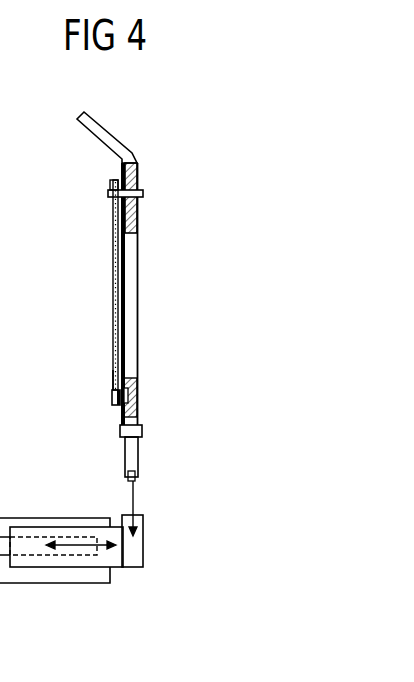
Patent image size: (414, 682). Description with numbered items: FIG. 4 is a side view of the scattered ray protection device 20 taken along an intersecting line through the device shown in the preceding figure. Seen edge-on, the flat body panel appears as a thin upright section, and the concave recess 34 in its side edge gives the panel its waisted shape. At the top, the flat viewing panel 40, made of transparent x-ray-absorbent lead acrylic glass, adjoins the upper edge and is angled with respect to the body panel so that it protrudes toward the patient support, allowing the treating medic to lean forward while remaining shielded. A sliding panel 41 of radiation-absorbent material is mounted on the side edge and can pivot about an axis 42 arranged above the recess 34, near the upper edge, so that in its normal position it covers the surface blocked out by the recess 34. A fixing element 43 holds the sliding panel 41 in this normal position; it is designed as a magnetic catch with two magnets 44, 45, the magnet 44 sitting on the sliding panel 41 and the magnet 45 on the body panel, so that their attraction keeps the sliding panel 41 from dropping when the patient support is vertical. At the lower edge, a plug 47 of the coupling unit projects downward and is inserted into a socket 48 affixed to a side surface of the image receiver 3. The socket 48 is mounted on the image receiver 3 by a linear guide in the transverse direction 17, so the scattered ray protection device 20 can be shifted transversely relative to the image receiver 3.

The image receiver 3 is at (20, 518).
The transverse direction 17 is at (80, 547).
The scattered ray protection device 20 is at (158, 180).
The concave recess 34 is at (134, 318).
The viewing panel 40 is at (110, 132).
The sliding panel 41 is at (111, 276).
The axis 42 is at (108, 193).
The fixing element 43 is at (100, 381).
The magnet 44 is at (108, 390).
The magnet 45 is at (138, 395).
The plug 47 is at (143, 462).
The socket 48 is at (143, 544).